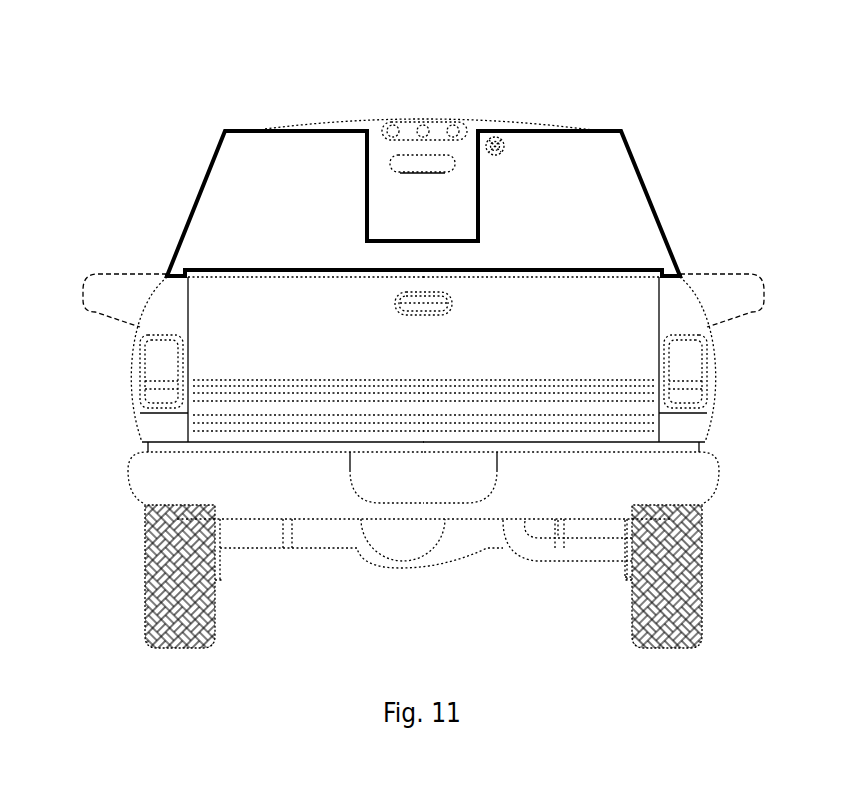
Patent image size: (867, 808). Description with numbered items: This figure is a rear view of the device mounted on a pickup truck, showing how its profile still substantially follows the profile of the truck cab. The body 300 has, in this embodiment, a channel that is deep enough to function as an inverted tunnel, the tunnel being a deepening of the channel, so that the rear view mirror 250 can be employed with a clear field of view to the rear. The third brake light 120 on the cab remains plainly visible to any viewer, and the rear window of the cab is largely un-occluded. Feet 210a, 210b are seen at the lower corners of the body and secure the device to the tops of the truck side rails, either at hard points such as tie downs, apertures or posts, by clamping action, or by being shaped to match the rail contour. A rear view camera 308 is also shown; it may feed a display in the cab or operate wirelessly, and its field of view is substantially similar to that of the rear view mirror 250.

The body 300 is at (240, 208).
The foot 210a is at (170, 268).
The foot 210b is at (678, 272).
The 3rd brake light 120 is at (410, 123).
The rear view camera 308 is at (503, 140).
The rear view mirror 250 is at (457, 175).